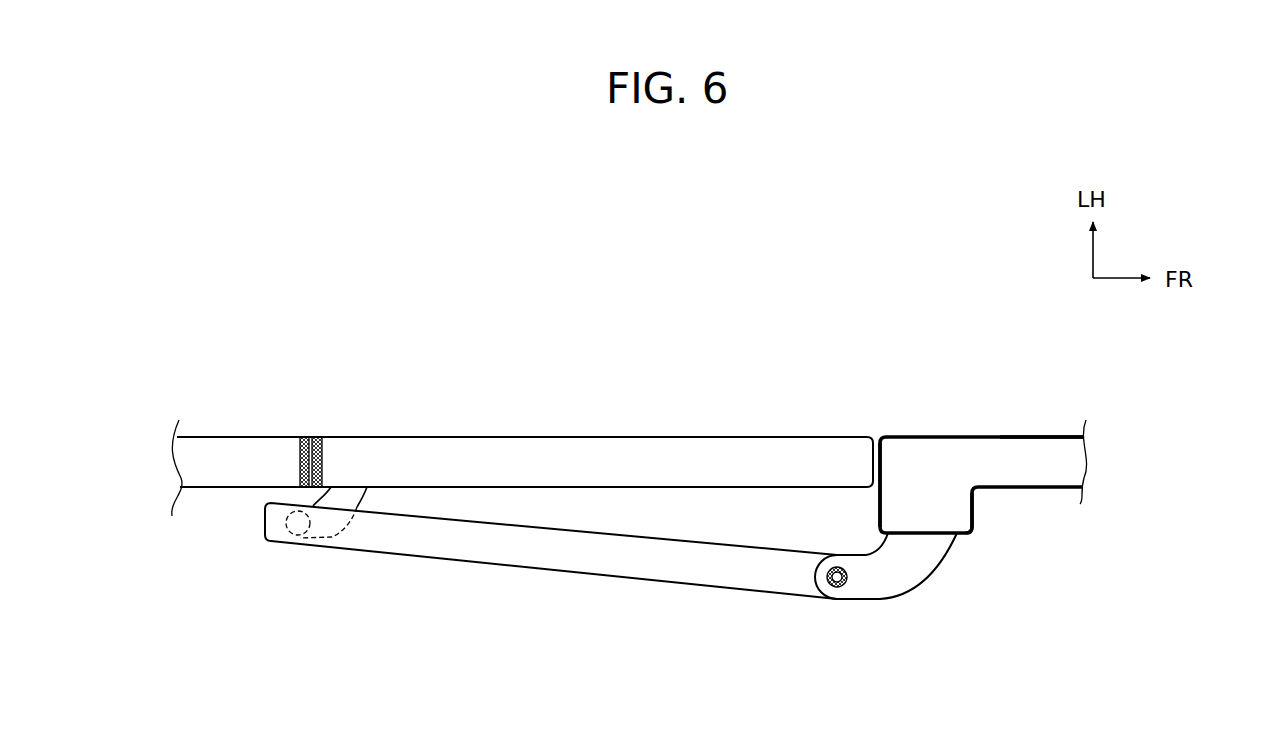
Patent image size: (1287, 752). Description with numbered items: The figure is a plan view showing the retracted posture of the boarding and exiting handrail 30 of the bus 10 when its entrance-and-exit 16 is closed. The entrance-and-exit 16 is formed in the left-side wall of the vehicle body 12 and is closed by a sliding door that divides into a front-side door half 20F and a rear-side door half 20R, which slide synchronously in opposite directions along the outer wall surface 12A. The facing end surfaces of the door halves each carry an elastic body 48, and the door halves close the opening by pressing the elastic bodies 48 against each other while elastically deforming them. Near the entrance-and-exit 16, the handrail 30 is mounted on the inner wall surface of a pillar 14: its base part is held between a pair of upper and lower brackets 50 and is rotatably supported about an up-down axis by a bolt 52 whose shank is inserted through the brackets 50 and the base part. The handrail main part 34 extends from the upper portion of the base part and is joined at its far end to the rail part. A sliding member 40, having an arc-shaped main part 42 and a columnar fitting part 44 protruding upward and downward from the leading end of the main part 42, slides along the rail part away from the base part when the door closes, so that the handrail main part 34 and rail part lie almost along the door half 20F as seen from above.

The bus 10 is at (538, 306).
The vehicle body 12 is at (1002, 432).
The outer wall surface 12A is at (1040, 437).
The pillar 14 is at (973, 530).
The entrance-and-exit 16 is at (878, 440).
The rear-side door half 20R is at (216, 437).
The front-side door half 20F is at (663, 437).
The boarding and exiting handrail 30 is at (528, 574).
The handrail main part 34 is at (622, 556).
The sliding member 40 is at (332, 546).
The main part 42 is at (357, 498).
The fitting part 44 is at (290, 541).
The elastic body 48 is at (304, 437).
The bracket 50 is at (897, 578).
The bolt 52 is at (836, 584).